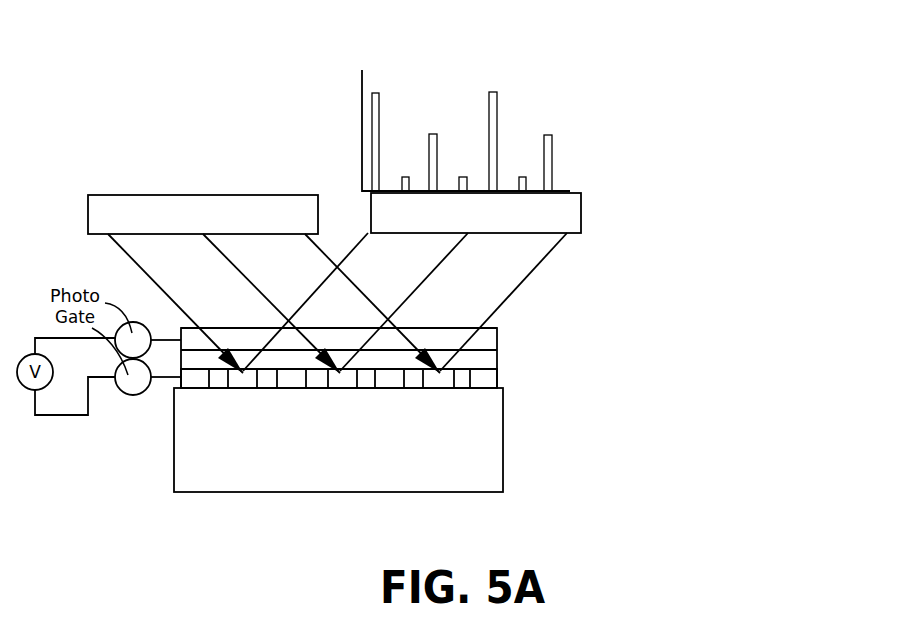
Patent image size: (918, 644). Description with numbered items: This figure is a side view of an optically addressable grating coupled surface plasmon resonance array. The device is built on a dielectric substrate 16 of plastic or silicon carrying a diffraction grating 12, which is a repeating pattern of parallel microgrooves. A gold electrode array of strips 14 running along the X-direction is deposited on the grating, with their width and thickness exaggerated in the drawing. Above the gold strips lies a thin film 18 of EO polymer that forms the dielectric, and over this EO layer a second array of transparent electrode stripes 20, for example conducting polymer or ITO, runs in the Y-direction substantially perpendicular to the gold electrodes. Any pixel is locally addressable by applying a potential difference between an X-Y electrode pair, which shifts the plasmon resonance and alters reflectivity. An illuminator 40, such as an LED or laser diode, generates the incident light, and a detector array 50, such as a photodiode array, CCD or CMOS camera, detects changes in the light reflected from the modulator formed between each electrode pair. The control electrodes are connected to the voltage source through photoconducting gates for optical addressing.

The diffraction grating 12 is at (437, 388).
The gold electrode array of strips 14 is at (288, 382).
The dielectric substrate 16 is at (325, 452).
The EO polymer thin film 18 is at (512, 358).
The transparent electrode stripes 20 is at (505, 332).
The illuminator 40 is at (98, 208).
The detector array 50 is at (568, 213).